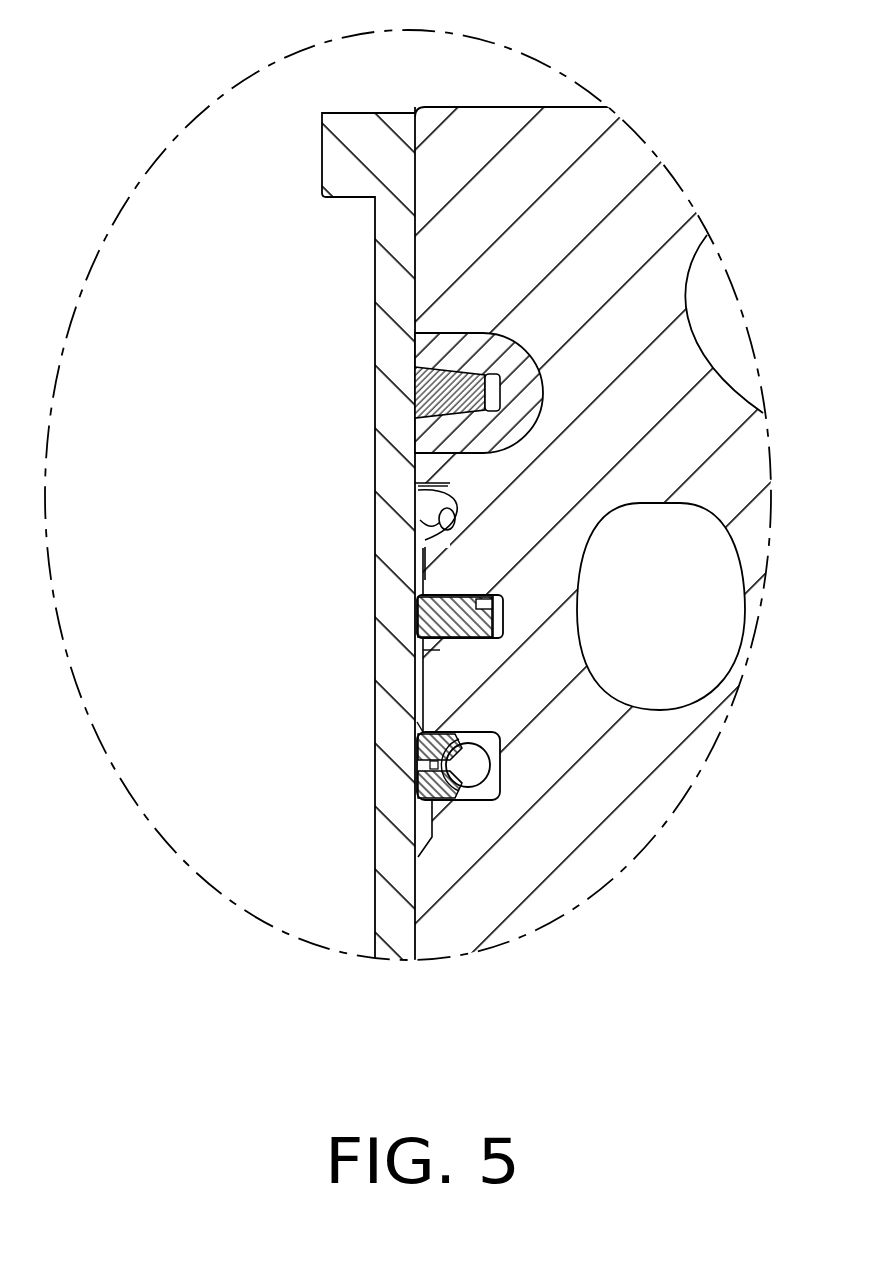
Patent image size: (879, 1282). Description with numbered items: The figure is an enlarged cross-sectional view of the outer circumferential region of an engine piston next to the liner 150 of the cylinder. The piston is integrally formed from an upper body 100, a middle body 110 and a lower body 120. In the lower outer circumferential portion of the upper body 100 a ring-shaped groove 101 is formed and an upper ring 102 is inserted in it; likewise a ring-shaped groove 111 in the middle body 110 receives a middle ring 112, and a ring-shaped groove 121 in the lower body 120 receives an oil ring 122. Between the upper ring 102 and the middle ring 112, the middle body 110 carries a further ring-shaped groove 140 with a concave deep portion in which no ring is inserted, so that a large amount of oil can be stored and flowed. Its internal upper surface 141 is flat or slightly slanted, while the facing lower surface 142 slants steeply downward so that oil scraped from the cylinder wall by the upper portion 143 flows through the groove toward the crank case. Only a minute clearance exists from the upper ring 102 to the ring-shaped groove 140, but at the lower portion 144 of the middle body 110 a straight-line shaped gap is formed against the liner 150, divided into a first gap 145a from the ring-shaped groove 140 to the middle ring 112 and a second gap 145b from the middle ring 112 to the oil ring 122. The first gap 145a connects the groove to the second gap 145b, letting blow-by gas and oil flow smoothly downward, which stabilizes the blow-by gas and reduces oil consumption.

The upper body 100 is at (453, 163).
The ring-shaped groove 101 is at (500, 388).
The upper ring 102 is at (415, 388).
The middle body 110 is at (420, 590).
The ring-shaped groove 111 is at (500, 613).
The middle ring 112 is at (443, 595).
The lower body 120 is at (418, 721).
The ring-shaped groove 121 is at (497, 787).
The oil ring 122 is at (417, 778).
The ring-shaped groove 140 is at (420, 547).
The internal upper surface 141 is at (432, 522).
The lower surface 142 is at (455, 500).
The upper portion 143 is at (450, 483).
The lower portion 144 is at (425, 650).
The first gap 145a is at (420, 550).
The second gap 145b is at (417, 722).
The liner 150 is at (385, 907).